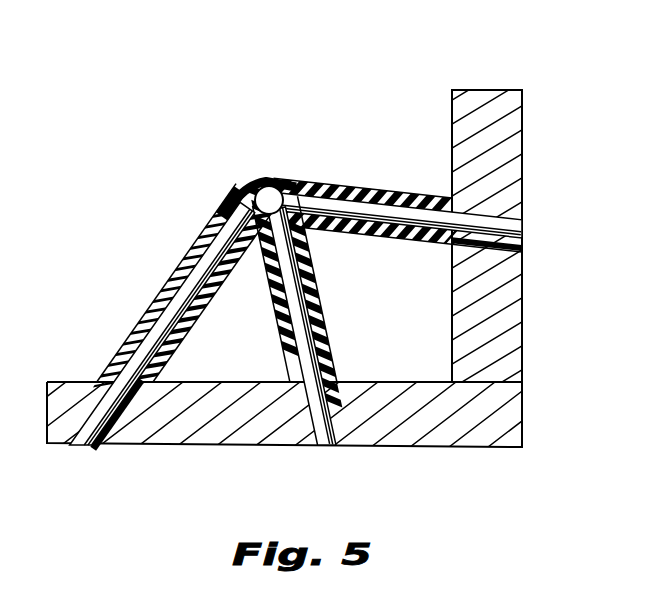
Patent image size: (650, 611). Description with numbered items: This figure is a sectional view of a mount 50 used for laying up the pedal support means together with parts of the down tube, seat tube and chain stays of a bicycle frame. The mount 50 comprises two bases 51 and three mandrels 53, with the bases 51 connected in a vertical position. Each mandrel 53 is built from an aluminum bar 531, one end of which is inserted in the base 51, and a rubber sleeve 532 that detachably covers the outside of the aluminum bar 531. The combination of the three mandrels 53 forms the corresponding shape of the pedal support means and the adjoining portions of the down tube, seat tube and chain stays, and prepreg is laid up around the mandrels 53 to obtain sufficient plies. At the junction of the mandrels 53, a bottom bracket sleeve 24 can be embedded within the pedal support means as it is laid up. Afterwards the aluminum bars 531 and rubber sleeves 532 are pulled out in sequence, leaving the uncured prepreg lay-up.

The mount 50 is at (160, 193).
The base 51 is at (510, 296).
The mandrel 53 is at (277, 272).
The aluminum bar 531 is at (197, 273).
The rubber sleeve 532 is at (125, 347).
The bottom bracket sleeve 24 is at (270, 187).